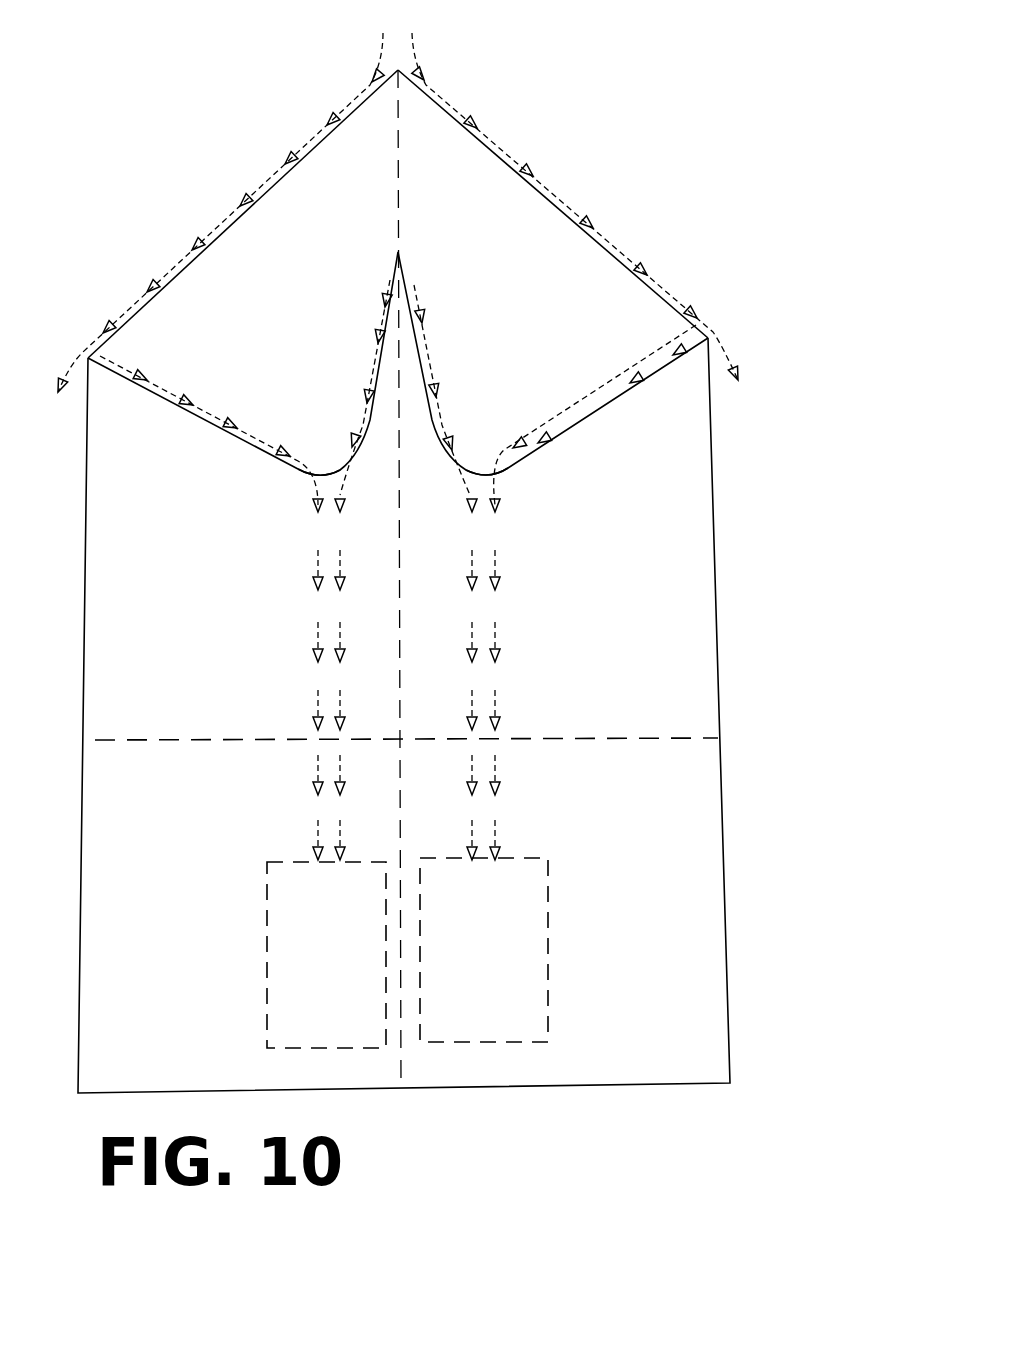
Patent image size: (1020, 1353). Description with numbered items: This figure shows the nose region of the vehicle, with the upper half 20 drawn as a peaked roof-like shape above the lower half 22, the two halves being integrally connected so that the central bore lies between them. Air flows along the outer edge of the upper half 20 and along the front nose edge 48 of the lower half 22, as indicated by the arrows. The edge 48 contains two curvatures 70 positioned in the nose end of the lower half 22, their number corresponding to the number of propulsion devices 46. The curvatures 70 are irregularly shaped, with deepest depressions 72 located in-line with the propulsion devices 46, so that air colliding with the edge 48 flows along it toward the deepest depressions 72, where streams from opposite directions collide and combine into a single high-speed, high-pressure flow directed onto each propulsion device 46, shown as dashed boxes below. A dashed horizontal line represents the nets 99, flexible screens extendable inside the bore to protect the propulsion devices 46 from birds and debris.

The upper half 20 is at (508, 242).
The lower half 22 is at (640, 487).
The propulsion device 46 is at (495, 997).
The edge 48 is at (180, 270).
The curvatures 70 is at (365, 435).
The deepest depressions 72 is at (322, 473).
The nets 99 is at (658, 737).